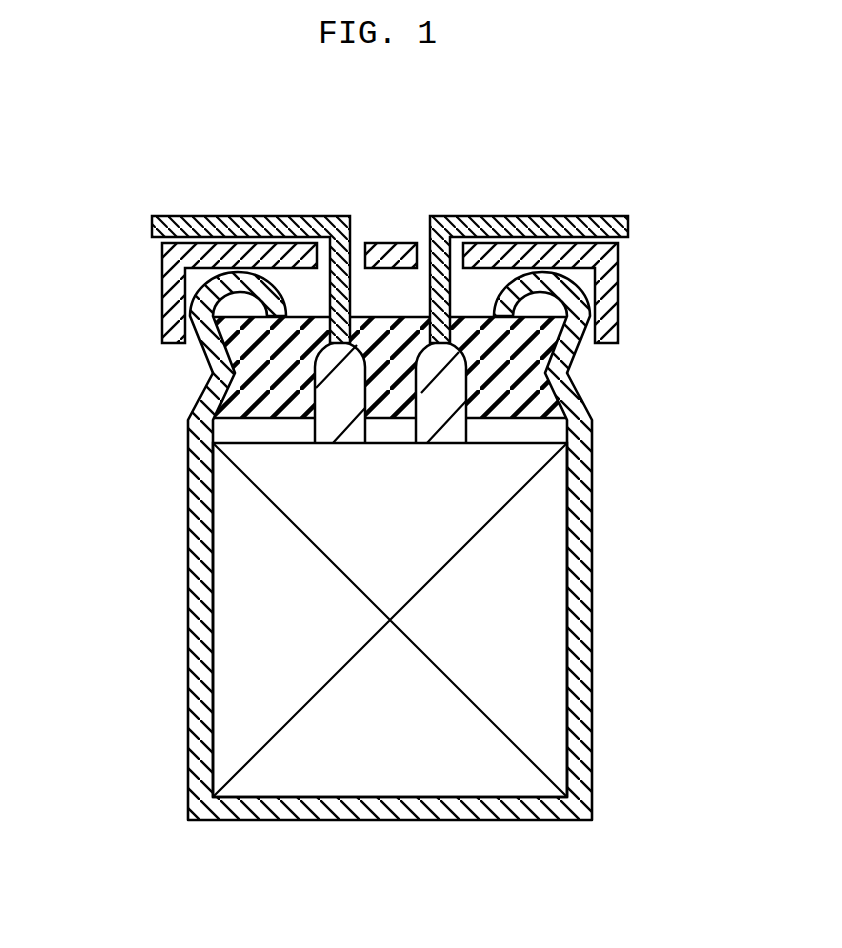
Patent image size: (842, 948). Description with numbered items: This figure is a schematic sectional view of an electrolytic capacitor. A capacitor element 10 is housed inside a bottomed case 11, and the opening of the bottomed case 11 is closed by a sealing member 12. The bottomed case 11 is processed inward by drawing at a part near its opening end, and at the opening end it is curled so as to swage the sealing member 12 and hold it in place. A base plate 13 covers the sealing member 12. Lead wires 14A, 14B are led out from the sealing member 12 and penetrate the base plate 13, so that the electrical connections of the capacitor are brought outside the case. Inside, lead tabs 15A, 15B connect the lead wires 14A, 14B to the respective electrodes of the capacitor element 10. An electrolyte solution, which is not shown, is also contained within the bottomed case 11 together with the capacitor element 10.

The capacitor element 10 is at (260, 590).
The bottomed case 11 is at (580, 552).
The sealing member 12 is at (507, 375).
The base plate 13 is at (388, 242).
The lead wire 14A is at (247, 216).
The lead wire 14B is at (534, 216).
The lead tab 15A is at (340, 380).
The lead tab 15B is at (440, 407).